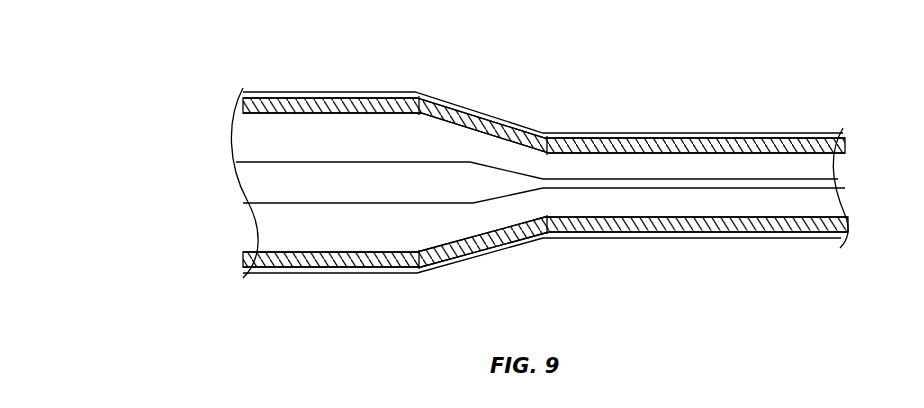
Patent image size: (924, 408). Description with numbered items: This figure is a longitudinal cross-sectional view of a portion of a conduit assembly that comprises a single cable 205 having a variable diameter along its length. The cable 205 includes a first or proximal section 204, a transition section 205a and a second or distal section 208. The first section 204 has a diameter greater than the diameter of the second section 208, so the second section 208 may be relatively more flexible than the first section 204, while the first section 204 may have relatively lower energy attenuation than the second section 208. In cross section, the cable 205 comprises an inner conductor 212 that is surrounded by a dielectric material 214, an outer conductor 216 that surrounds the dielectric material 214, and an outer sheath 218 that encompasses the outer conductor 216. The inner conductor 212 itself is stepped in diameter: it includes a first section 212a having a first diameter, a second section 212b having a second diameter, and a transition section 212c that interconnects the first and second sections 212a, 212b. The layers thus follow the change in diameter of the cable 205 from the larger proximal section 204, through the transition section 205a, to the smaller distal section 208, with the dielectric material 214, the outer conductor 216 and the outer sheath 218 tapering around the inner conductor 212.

The first section 204 is at (258, 88).
The cable 205 is at (722, 54).
The transition section 205a is at (477, 108).
The second section 208 is at (815, 128).
The inner conductor 212 is at (540, 128).
The first section 212a is at (310, 161).
The second section 212b is at (657, 180).
The transition section 212c is at (500, 168).
The dielectric material 214 is at (323, 233).
The outer conductor 216 is at (545, 200).
The outer sheath 218 is at (478, 253).